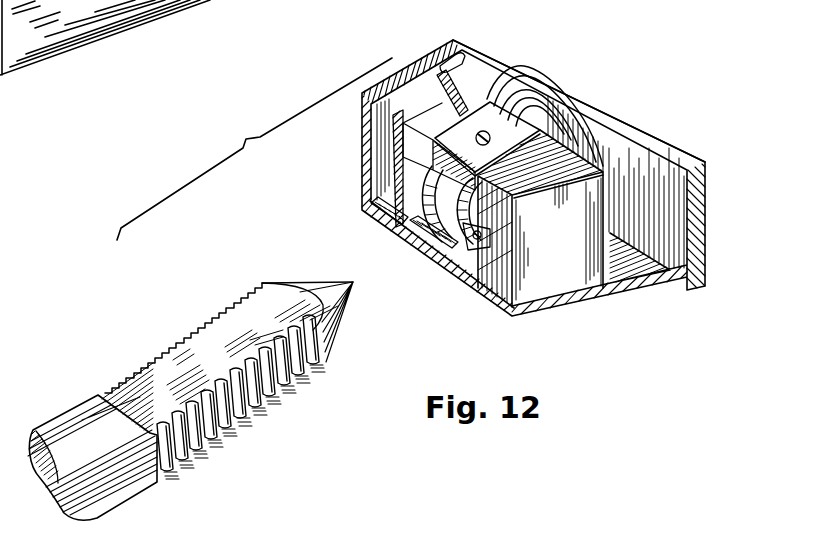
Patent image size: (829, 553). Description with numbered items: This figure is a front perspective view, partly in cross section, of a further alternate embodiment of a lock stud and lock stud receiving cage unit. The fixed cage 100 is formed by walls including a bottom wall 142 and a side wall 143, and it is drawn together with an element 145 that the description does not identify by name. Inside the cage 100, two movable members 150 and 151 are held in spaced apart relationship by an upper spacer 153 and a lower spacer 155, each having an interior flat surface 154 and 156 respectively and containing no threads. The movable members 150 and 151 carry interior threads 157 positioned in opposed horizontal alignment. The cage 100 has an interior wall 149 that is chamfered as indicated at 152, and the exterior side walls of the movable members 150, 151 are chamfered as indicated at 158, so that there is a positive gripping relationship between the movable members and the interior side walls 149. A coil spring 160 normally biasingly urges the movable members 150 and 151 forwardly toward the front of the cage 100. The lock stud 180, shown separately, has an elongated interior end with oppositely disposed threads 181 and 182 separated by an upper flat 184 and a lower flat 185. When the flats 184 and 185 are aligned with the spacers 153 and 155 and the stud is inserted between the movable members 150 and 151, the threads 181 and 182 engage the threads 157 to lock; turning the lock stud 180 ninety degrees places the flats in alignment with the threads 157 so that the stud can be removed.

The fixed cage 100 is at (540, 67).
The bottom wall 142 is at (490, 295).
The side wall 143 is at (424, 55).
The housing 145 is at (622, 118).
The interior wall 149 is at (433, 97).
The movable member 150 is at (368, 192).
The movable member 151 is at (567, 270).
The chamfer 152 is at (433, 118).
The upper spacer 153 is at (530, 96).
The interior flat surface 154 is at (400, 230).
The lower spacer 155 is at (458, 262).
The interior flat surface 156 is at (447, 262).
The interior threads 157 is at (408, 236).
The chamfer 158 is at (447, 45).
The coil spring 160 is at (514, 73).
The lock stud 180 is at (82, 393).
The thread 181 is at (163, 347).
The thread 182 is at (248, 408).
The upper flat 184 is at (242, 320).
The lower flat 185 is at (195, 450).